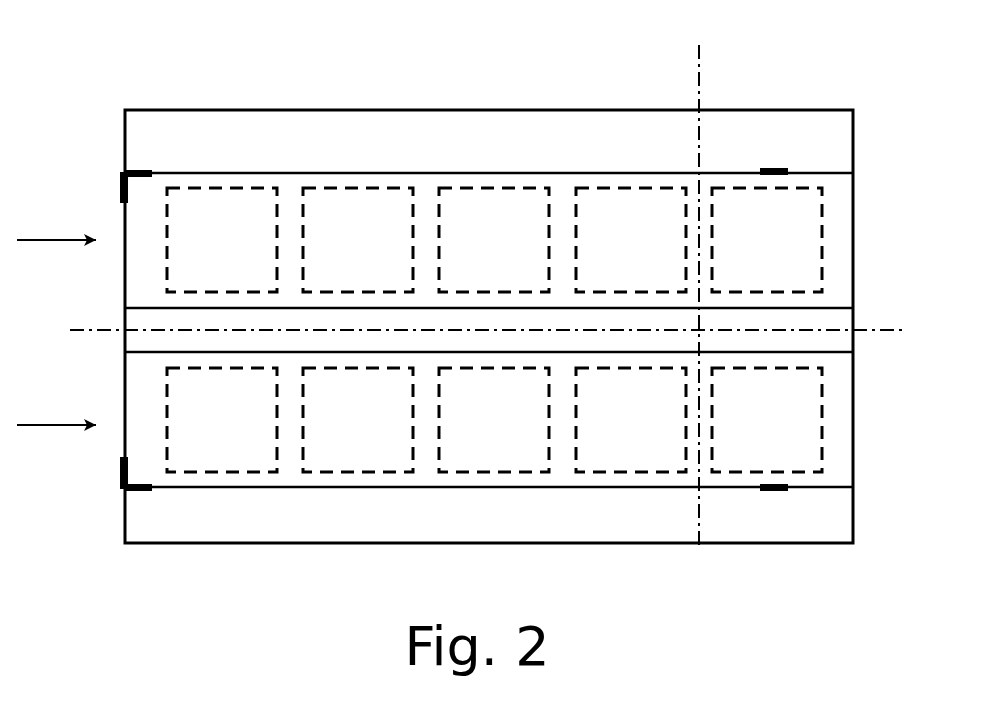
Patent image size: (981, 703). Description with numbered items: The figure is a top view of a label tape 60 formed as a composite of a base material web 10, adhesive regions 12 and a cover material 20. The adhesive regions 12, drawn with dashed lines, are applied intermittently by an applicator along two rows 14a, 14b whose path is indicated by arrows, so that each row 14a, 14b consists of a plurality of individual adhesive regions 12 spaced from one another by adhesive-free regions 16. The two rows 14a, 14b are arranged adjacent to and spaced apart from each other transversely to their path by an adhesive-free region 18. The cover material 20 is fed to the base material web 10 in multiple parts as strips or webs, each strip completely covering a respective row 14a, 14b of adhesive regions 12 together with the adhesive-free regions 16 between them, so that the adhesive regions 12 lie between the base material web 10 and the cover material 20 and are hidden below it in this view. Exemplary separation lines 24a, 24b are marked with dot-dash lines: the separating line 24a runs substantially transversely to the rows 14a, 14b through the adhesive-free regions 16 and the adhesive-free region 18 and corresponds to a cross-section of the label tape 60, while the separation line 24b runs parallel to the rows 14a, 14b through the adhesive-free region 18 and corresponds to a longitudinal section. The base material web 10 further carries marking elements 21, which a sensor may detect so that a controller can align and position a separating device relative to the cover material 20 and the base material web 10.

The base material web 10 is at (362, 133).
The adhesive regions 12 is at (494, 330).
The first row 14a is at (56, 215).
The second row 14b is at (56, 396).
The adhesive-free regions 16 is at (290, 205).
The adhesive-free region 18 is at (885, 382).
The cover material 20 is at (157, 237).
The marking elements 21 is at (107, 170).
The separating line 24a is at (704, 90).
The separation line 24b is at (872, 330).
The label tape 60 is at (838, 66).